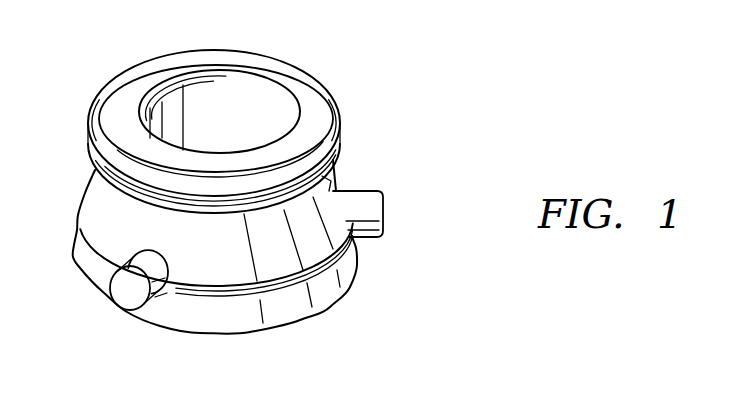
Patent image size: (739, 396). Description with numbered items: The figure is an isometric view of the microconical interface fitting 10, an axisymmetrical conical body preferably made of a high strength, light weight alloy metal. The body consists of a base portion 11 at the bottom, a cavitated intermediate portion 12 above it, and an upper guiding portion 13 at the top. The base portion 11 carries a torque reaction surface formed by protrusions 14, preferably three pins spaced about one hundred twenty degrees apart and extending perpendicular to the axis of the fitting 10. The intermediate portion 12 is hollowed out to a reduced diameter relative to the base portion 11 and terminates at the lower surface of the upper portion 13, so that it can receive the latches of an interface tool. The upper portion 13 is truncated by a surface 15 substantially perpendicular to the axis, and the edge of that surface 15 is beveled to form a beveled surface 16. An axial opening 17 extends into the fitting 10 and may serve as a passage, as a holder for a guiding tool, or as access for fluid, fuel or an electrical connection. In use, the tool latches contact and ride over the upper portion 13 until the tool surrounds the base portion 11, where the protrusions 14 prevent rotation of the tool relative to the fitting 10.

The microconical interface fitting 10 is at (311, 90).
The base portion 11 is at (79, 250).
The cavitated intermediate portion 12 is at (333, 184).
The upper guiding portion 13 is at (335, 130).
The protrusions 14 is at (386, 190).
The surface 15 is at (272, 70).
The beveled surface 16 is at (97, 108).
The axial opening 17 is at (172, 102).